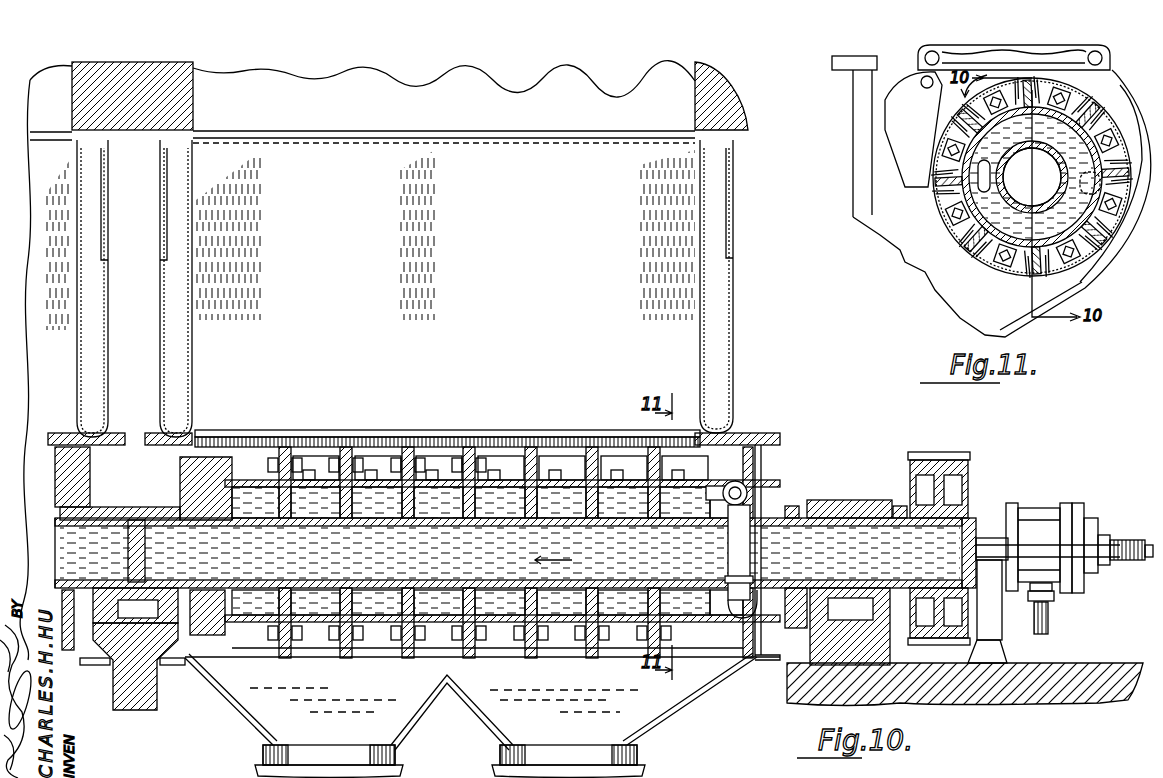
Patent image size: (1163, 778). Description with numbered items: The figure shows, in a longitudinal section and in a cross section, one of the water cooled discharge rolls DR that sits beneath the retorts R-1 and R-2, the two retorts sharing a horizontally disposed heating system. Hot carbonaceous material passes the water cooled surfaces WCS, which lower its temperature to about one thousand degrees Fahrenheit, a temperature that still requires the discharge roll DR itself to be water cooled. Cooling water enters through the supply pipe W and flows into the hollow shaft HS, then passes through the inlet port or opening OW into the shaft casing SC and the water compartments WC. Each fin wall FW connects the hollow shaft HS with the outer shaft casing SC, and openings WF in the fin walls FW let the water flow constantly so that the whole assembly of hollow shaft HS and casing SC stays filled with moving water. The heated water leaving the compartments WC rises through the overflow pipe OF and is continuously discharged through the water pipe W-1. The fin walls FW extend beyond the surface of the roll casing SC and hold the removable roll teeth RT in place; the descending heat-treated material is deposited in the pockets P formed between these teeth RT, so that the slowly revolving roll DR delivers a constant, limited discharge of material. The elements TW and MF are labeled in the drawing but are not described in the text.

In FIG. 10, the retort R-1 is at (590, 96).
In FIG. 10, the retort R-2 is at (62, 122).
In FIG. 10, the water cooled surfaces WCS is at (176, 288).
In FIG. 10, the shaft casing SC is at (246, 495).
In FIG. 11, the shaft casing SC is at (960, 218).
In FIG. 10, the openings WF is at (300, 478).
In FIG. 11, the openings WF is at (975, 178).
In FIG. 10, the fin wall FW is at (388, 470).
In FIG. 10, the removable roll teeth RT is at (382, 470).
In FIG. 11, the removable roll teeth RT is at (992, 247).
In FIG. 10, the pockets P is at (510, 475).
In FIG. 11, the pockets P is at (955, 203).
In FIG. 10, the overflow pipe OF is at (752, 490).
In FIG. 10, the water compartments WC is at (258, 505).
In FIG. 10, the inlet port or opening OW is at (250, 522).
In FIG. 10, the tube wall TW is at (473, 500).
In FIG. 10, the hollow shaft HS is at (508, 553).
In FIG. 11, the hollow shaft HS is at (1032, 177).
In FIG. 10, the discharge rolls DR is at (318, 635).
In FIG. 11, the discharge rolls DR is at (945, 232).
In FIG. 10, the water pipe W-1 is at (1123, 538).
In FIG. 10, the supply pipe W is at (1033, 620).
In FIG. 11, the mounting flange MF is at (897, 138).